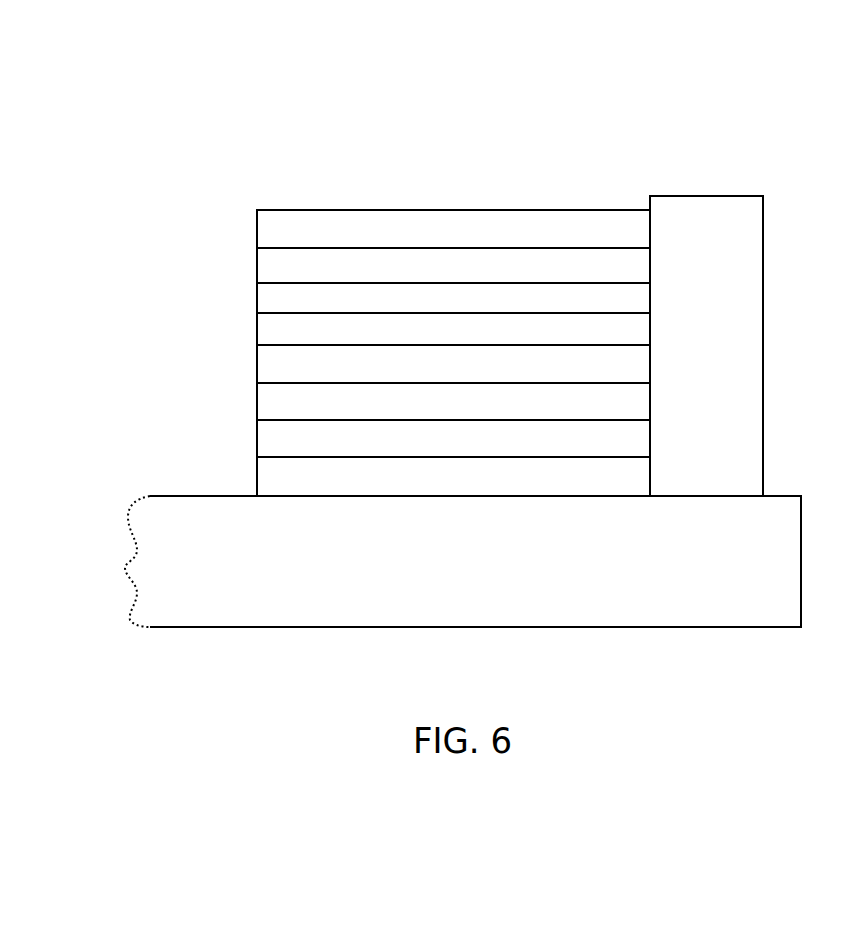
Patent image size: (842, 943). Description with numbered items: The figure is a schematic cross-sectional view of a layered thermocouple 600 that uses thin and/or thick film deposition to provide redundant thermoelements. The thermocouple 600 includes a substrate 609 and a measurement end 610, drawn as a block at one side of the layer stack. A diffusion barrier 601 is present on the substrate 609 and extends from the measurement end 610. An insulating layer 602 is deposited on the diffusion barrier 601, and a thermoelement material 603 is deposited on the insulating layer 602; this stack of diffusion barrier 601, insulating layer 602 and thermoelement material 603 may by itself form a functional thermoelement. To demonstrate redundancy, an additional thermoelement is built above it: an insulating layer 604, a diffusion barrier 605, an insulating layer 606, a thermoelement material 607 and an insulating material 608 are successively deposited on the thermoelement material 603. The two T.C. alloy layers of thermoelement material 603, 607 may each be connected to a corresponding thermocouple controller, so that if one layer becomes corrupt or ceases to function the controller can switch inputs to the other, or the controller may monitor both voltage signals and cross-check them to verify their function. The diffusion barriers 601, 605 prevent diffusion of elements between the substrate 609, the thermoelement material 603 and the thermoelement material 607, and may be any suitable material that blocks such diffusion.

The thermocouple 600 is at (576, 128).
The diffusion barrier 601 is at (453, 476).
The insulating layer 602 is at (453, 438).
The thermoelement material 603 is at (453, 401).
The insulating layer 604 is at (453, 364).
The diffusion barrier 605 is at (453, 329).
The insulating layer 606 is at (453, 298).
The thermoelement material 607 is at (453, 265).
The insulating material 608 is at (453, 229).
The substrate 609 is at (463, 561).
The measurement end 610 is at (706, 346).